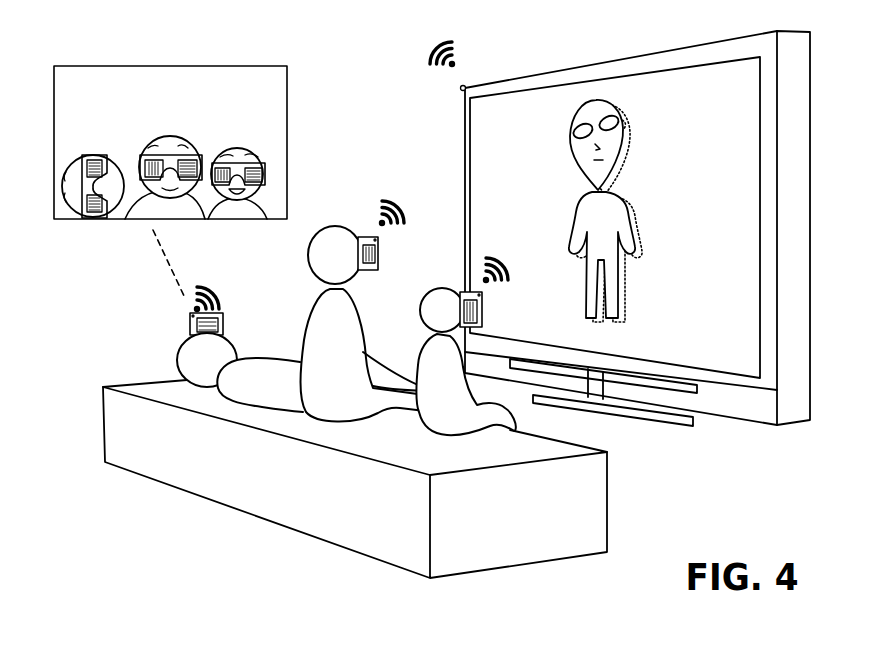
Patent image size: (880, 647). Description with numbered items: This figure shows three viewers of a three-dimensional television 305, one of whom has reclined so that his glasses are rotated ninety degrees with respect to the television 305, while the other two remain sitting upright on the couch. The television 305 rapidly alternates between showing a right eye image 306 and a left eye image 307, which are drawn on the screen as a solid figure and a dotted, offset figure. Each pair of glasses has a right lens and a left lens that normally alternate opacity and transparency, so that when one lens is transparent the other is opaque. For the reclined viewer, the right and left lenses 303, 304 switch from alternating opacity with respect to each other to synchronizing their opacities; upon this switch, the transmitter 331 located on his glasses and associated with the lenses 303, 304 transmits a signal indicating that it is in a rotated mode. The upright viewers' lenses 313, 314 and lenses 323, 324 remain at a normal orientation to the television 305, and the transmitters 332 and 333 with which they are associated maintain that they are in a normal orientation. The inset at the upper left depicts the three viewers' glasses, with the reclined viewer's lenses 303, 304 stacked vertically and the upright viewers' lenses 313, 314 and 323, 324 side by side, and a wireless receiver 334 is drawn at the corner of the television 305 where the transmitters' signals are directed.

The right lens 303 is at (102, 219).
The left lens 304 is at (98, 160).
The television 305 is at (737, 95).
The right eye image 306 is at (580, 291).
The left eye image 307 is at (622, 312).
The right lens 313 is at (148, 158).
The left lens 314 is at (188, 160).
The right lens 323 is at (220, 165).
The left lens 324 is at (257, 167).
The transmitter 331 is at (190, 315).
The transmitter 332 is at (375, 237).
The transmitter 333 is at (477, 297).
The wireless receiver/sensor on display 334 is at (463, 86).